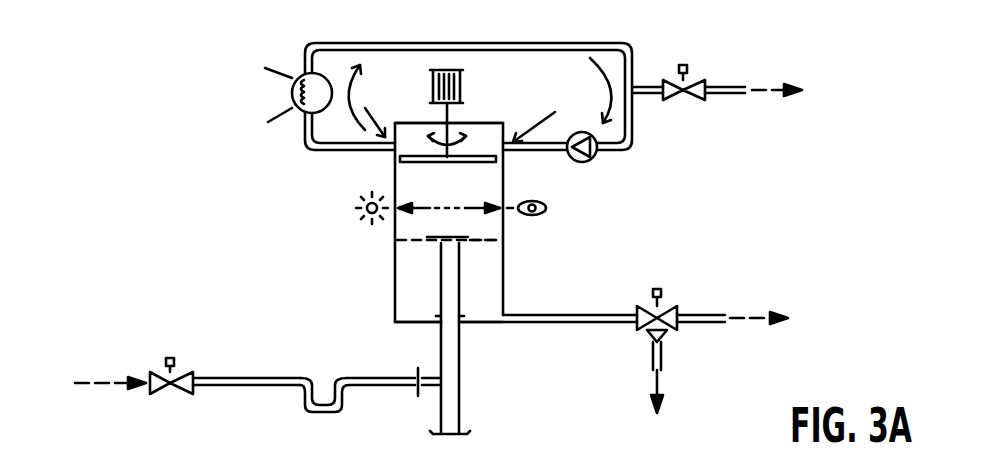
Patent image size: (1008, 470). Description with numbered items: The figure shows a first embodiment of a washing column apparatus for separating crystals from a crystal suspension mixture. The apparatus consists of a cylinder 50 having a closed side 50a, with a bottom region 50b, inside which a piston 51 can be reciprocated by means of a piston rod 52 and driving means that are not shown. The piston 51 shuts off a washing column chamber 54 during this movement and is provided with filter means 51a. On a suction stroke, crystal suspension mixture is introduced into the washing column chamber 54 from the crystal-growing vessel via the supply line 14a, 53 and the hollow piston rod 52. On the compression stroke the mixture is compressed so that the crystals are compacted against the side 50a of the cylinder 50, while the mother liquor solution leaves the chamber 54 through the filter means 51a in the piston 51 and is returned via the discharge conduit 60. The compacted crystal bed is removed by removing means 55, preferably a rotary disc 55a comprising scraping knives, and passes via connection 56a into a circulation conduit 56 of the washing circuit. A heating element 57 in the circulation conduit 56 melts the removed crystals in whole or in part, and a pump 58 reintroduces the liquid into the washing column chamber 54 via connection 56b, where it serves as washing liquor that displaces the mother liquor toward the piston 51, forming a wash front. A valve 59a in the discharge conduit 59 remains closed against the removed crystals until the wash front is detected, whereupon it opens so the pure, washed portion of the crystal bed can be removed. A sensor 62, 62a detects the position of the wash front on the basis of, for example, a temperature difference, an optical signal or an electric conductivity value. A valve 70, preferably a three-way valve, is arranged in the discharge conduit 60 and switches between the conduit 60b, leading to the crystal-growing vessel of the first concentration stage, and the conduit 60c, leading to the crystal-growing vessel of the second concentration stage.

The supply line 14a is at (258, 411).
The trap / feed line 53 is at (320, 412).
The cylinder 50 is at (395, 292).
The closed side 50a is at (418, 120).
The tank bottom 50b is at (437, 323).
The piston 51 is at (393, 250).
The filter means 51a is at (488, 241).
The piston rod 52 is at (452, 409).
The washing column chamber 54 is at (448, 224).
The removing means 55 is at (463, 83).
The rotary disc 55a is at (487, 163).
The circulation conduit 56 is at (308, 150).
The connection 56a is at (375, 101).
The connection 56b is at (562, 100).
The heating element 57 is at (297, 96).
The pump 58 is at (598, 155).
The discharge conduit 59 is at (730, 94).
The valve 59a is at (673, 100).
The discharge conduit 60 is at (532, 323).
The conduit 60b is at (655, 355).
The conduit 60c is at (700, 312).
The sensor 62 is at (548, 212).
The sensor 62a is at (355, 208).
The valve 70 is at (670, 328).